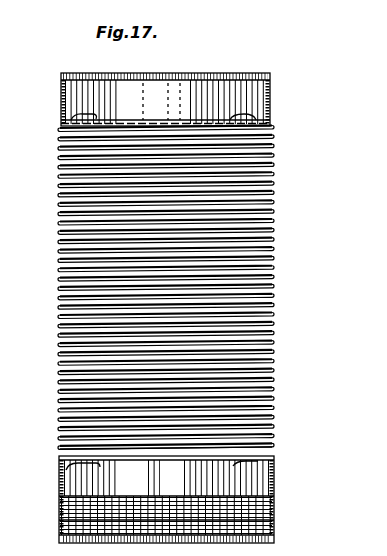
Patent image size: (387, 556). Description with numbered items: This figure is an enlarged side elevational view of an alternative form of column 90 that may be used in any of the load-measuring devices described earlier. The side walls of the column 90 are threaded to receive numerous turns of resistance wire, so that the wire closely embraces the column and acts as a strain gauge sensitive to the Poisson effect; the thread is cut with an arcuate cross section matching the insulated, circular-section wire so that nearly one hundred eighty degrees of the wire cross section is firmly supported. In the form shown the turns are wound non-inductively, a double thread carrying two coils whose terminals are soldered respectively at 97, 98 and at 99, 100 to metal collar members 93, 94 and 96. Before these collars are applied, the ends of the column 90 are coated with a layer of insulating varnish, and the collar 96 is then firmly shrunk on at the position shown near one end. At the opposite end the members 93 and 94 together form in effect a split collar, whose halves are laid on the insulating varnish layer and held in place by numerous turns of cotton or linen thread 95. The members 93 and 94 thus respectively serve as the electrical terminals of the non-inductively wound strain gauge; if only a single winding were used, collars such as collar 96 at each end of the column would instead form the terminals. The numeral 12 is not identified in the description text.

The coil spring 12 is at (48, 157).
The column 90 is at (252, 70).
The metal collar member 93 is at (70, 475).
The metal collar member 94 is at (238, 478).
The turns of cotton or linen thread 95 is at (52, 511).
The collar 96 is at (53, 80).
The soldered terminal 97 is at (62, 461).
The soldered terminal 98 is at (240, 108).
The soldered terminal 99 is at (53, 103).
The soldered terminal 100 is at (262, 446).